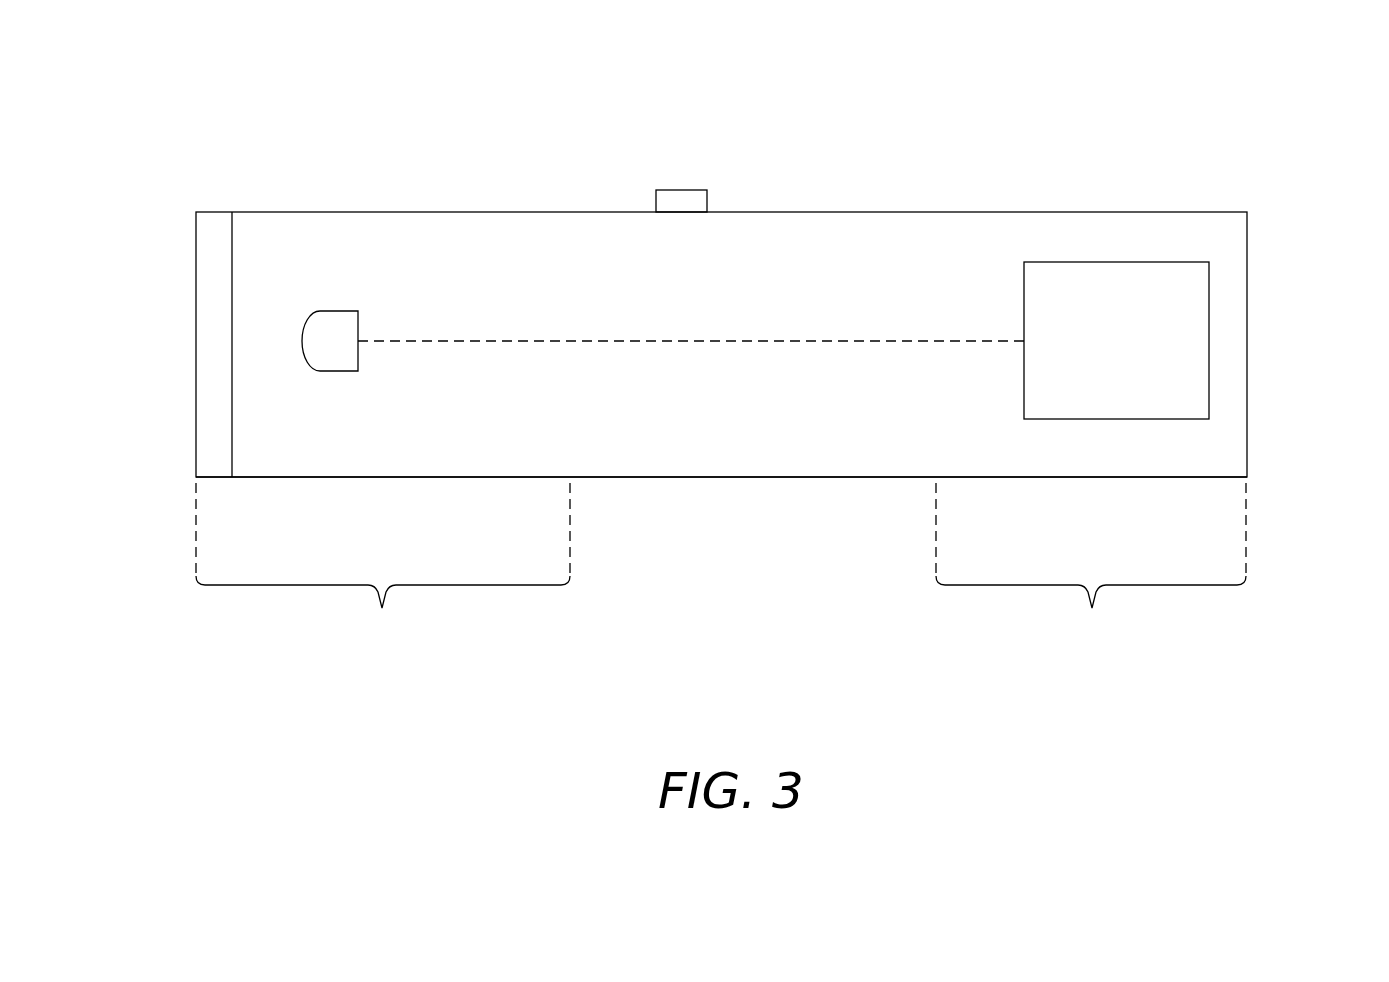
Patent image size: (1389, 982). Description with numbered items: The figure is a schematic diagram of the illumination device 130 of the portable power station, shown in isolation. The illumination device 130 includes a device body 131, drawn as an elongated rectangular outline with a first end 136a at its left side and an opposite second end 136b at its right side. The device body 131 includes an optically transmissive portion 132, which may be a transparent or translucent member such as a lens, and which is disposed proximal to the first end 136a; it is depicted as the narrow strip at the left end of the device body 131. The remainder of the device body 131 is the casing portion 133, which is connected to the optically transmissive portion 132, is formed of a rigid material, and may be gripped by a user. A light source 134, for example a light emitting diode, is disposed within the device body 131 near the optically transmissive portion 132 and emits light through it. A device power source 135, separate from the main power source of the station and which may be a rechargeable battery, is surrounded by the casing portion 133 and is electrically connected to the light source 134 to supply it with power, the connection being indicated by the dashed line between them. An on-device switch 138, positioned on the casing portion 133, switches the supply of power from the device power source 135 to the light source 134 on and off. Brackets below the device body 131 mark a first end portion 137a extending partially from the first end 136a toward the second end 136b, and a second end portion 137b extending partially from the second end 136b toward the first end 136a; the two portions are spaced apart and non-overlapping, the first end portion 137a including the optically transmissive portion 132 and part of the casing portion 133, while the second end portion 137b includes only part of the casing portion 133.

The illumination device 130 is at (1268, 91).
The device body 131 is at (893, 196).
The optically transmissive portion 132 is at (203, 286).
The casing portion 133 is at (742, 479).
The light source 134 is at (331, 326).
The device power source 135 is at (1116, 340).
The first end 136a is at (170, 437).
The second end 136b is at (1278, 366).
The first end portion 137a is at (383, 563).
The second end portion 137b is at (1091, 563).
The on-device switch 138 is at (681, 201).